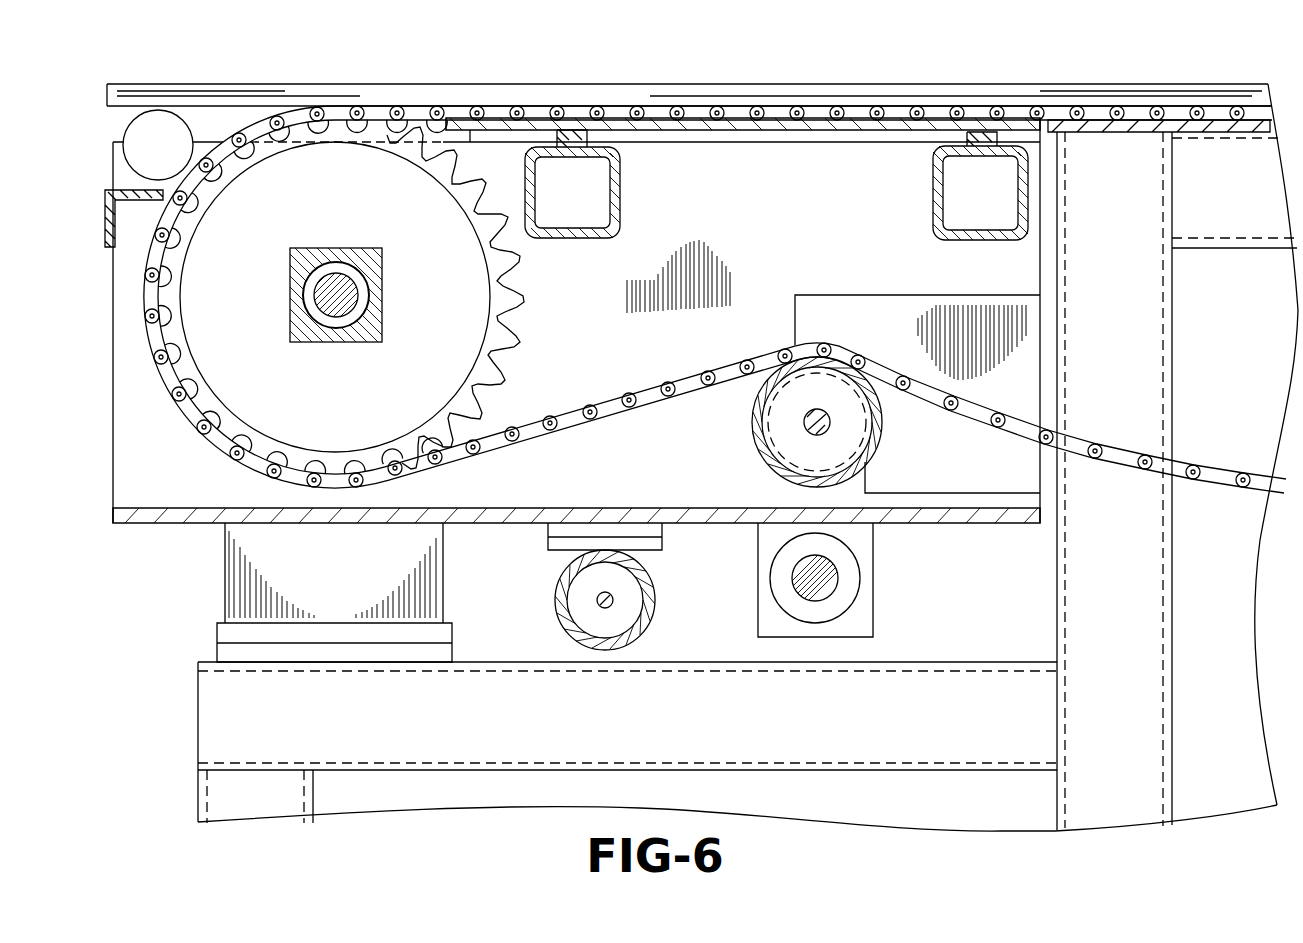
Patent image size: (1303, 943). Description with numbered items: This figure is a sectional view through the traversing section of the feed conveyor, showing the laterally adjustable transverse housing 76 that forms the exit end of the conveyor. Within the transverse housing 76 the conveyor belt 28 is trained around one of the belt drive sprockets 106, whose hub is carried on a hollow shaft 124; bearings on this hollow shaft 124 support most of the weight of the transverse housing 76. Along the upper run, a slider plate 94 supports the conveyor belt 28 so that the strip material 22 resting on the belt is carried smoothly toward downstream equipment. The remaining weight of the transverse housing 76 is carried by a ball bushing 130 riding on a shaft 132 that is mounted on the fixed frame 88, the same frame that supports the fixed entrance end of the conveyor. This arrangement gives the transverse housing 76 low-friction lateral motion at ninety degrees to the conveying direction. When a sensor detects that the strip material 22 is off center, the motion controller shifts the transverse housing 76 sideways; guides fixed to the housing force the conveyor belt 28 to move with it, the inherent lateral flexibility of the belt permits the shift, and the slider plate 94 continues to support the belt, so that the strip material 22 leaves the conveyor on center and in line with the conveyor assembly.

The strip material 22 is at (733, 84).
The conveyor belt 28 is at (443, 107).
The slider plate 94 is at (735, 132).
The belt drive sprockets 106 is at (527, 293).
The hollow shaft 124 is at (347, 264).
The transverse housing 76 is at (963, 524).
The ball bushing 130 is at (846, 600).
The shaft 132 is at (815, 601).
The fixed frame 88 is at (1108, 807).